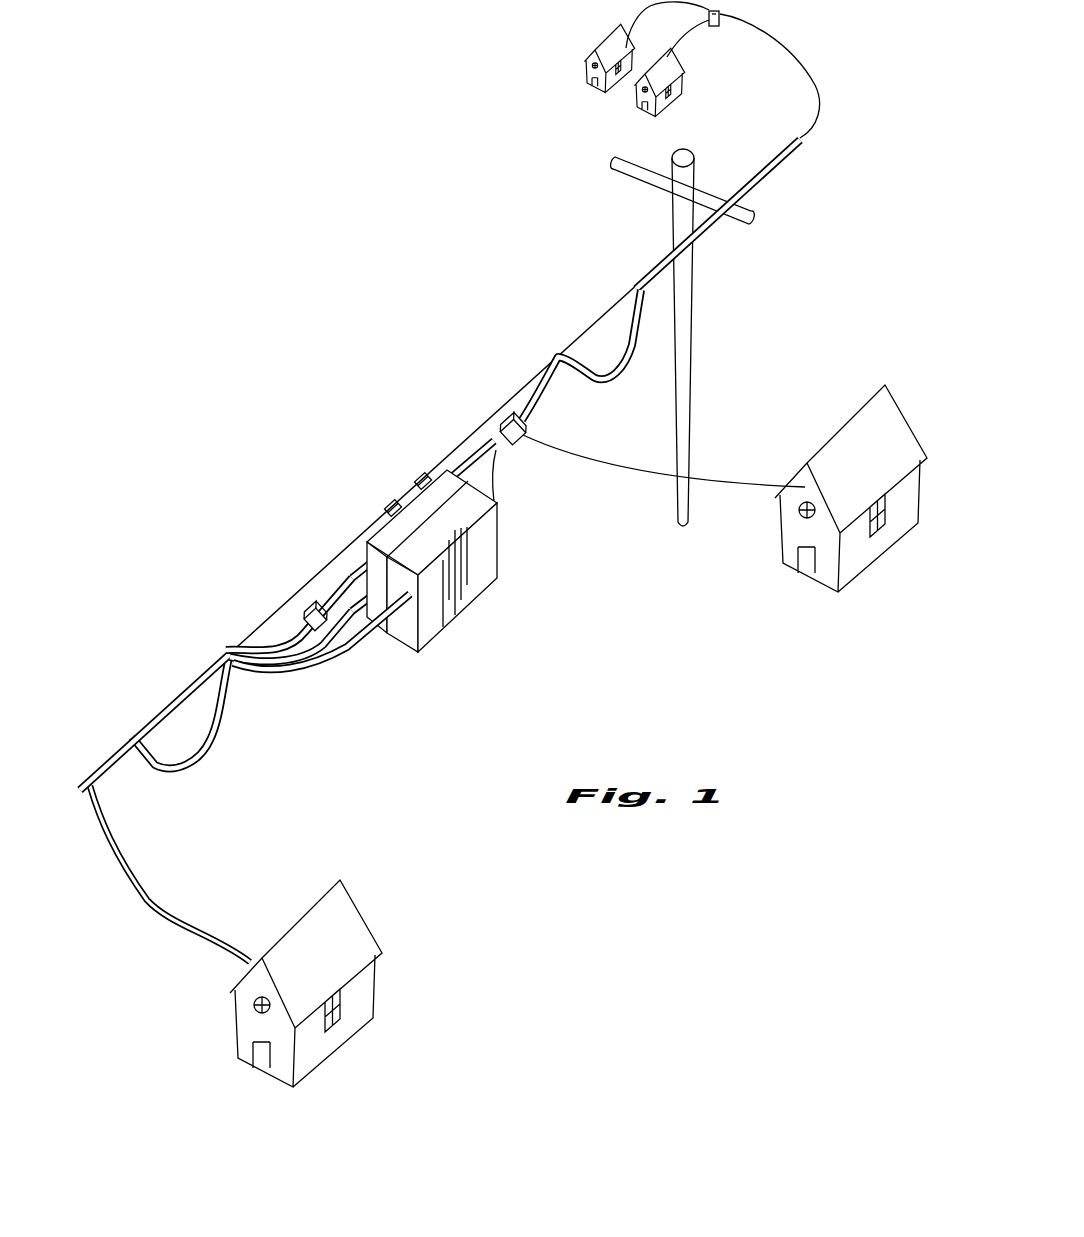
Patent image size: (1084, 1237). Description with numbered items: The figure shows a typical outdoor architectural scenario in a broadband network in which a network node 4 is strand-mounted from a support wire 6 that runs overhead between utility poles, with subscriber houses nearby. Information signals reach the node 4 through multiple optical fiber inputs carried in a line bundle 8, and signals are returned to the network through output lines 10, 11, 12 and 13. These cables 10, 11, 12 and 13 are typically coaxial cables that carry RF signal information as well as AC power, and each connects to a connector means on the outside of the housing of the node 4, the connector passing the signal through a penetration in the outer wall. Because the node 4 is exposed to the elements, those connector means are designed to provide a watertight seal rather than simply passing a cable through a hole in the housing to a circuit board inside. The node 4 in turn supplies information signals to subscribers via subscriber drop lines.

The network node 4 is at (457, 613).
The support wire 6 is at (530, 380).
The line bundle 8 is at (333, 672).
The output line 10 is at (338, 641).
The output line 11 is at (780, 44).
The output line 12 is at (485, 445).
The output line 13 is at (342, 592).